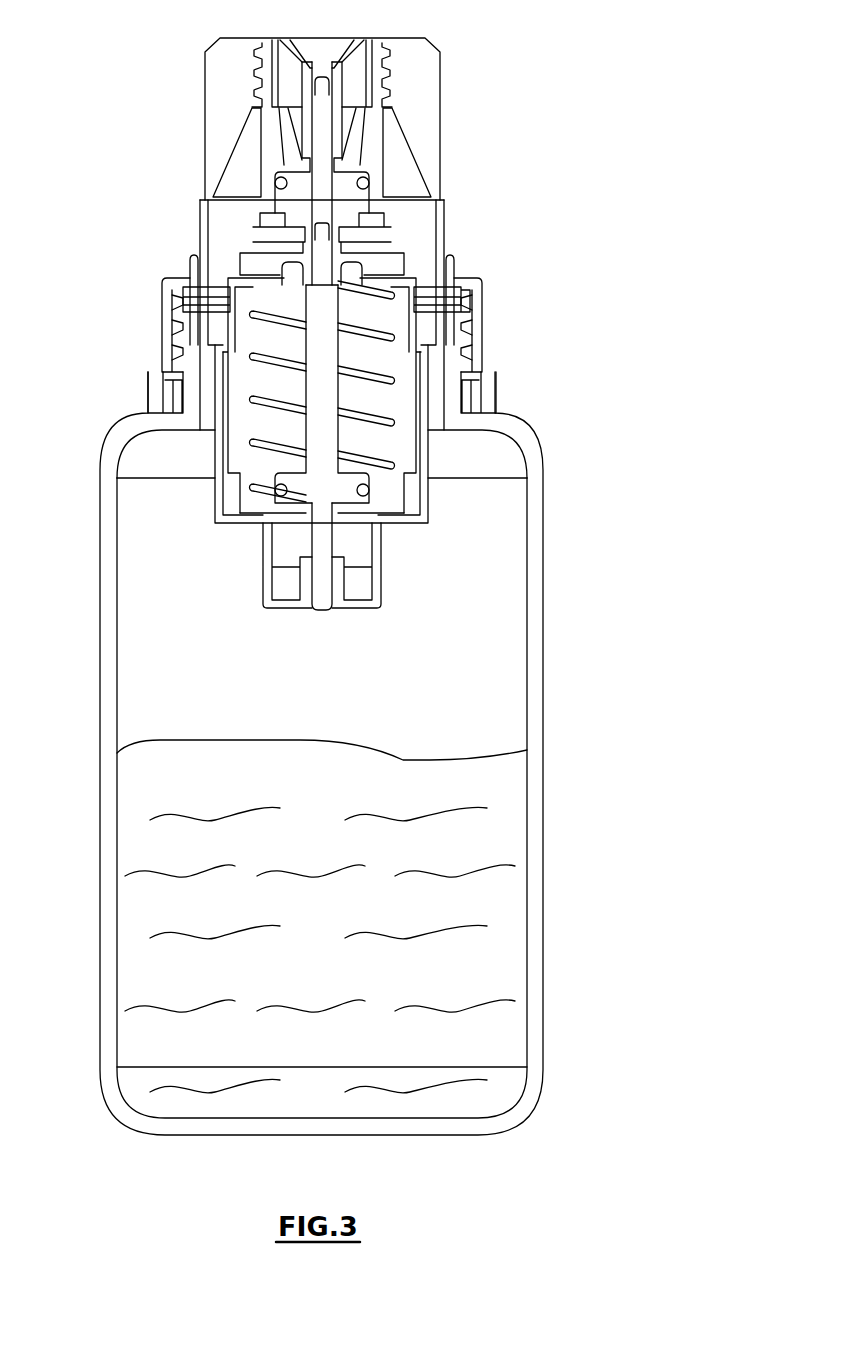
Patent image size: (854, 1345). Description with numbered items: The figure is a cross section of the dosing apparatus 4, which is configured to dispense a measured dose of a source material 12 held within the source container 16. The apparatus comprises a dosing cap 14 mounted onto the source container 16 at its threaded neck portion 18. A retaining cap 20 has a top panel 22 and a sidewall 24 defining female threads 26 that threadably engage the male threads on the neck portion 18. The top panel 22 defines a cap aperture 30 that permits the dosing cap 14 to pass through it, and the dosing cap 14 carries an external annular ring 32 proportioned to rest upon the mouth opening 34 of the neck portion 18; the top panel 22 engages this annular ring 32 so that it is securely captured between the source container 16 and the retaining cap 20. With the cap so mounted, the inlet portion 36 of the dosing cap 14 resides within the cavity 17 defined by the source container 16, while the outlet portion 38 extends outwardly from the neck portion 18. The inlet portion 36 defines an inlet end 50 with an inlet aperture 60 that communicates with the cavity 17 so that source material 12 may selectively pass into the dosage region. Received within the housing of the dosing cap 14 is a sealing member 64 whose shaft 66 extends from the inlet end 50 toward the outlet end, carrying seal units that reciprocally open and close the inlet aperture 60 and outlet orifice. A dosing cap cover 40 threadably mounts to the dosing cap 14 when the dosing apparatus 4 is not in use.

The dosing apparatus 4 is at (630, 132).
The dosing cap cover 40 is at (441, 122).
The dosing cap 14 is at (455, 226).
The outlet portion 38 is at (200, 222).
The top panel 22 is at (193, 255).
The cap aperture 30 is at (437, 270).
The external annular ring 32 is at (477, 290).
The mouth opening 34 is at (162, 295).
The retaining cap 20 is at (497, 318).
The sidewall 24 is at (162, 328).
The female threads 26 is at (470, 363).
The threaded neck portion 18 is at (453, 404).
The inlet portion 36 is at (432, 500).
The sealing member 64 is at (322, 428).
The shaft 66 is at (330, 388).
The inlet end 50 is at (378, 580).
The inlet aperture 60 is at (355, 613).
The cavity 17 is at (475, 598).
The source container 16 is at (543, 665).
The source material 12 is at (512, 790).